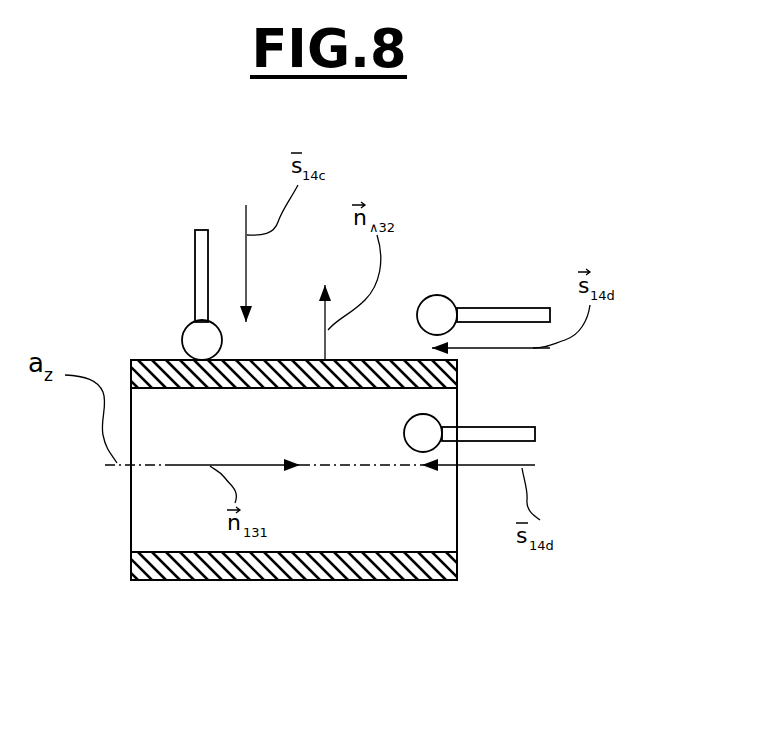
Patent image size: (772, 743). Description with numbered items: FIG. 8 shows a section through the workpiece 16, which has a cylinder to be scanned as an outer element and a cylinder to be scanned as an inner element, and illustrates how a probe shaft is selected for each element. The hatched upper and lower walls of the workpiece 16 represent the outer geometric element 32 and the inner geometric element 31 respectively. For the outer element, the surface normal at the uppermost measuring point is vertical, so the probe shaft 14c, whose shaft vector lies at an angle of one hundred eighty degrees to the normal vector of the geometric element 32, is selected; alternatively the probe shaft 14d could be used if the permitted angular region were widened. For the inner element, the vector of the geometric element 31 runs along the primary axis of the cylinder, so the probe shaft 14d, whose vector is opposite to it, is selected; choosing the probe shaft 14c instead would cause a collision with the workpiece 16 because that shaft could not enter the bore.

The probe shaft 14c is at (195, 245).
The probe shaft 14d is at (485, 307).
The workpiece 16 is at (330, 536).
The geometric element 31 is at (177, 552).
The geometric element 32 is at (158, 360).